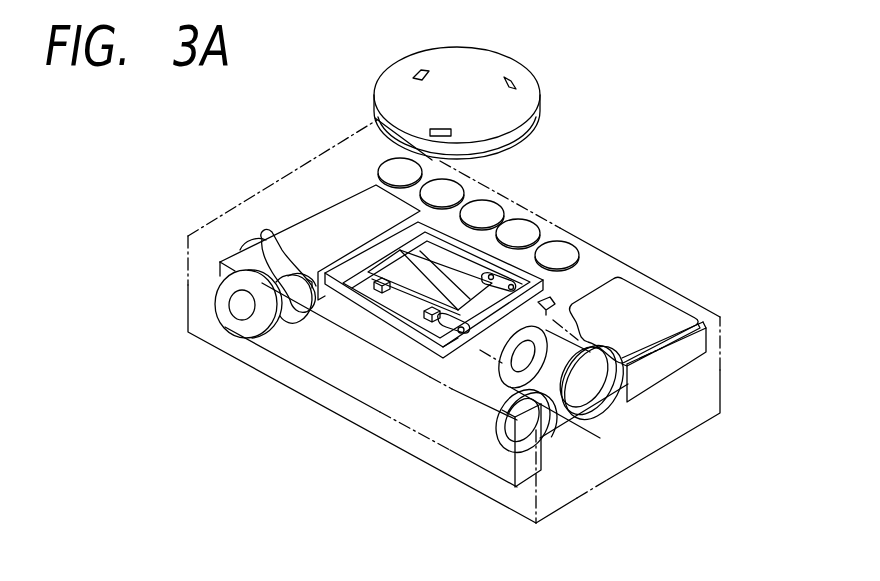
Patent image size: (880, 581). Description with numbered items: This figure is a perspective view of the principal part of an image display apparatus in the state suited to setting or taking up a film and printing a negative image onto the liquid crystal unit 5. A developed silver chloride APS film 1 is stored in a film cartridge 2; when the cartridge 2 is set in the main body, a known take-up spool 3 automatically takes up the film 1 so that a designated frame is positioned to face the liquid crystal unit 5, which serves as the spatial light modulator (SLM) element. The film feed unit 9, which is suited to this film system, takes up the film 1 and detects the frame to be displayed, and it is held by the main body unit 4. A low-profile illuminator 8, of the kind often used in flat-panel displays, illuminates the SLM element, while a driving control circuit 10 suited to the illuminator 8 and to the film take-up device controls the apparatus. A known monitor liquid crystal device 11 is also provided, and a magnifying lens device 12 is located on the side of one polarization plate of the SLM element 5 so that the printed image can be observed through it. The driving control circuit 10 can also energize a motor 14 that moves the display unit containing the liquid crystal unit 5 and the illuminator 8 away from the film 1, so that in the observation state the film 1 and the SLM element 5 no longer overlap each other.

The film 1 is at (557, 348).
The film cartridge 2 is at (313, 227).
The take-up spool 3 is at (527, 432).
The main body unit 4 is at (647, 447).
The liquid crystal unit 5 is at (452, 278).
The illuminator 8 is at (552, 306).
The film feed unit 9 is at (308, 357).
The driving control circuit 10 is at (700, 356).
The monitor liquid crystal device 11 is at (680, 315).
The magnifying lens device 12 is at (500, 58).
The motor 14 is at (483, 335).